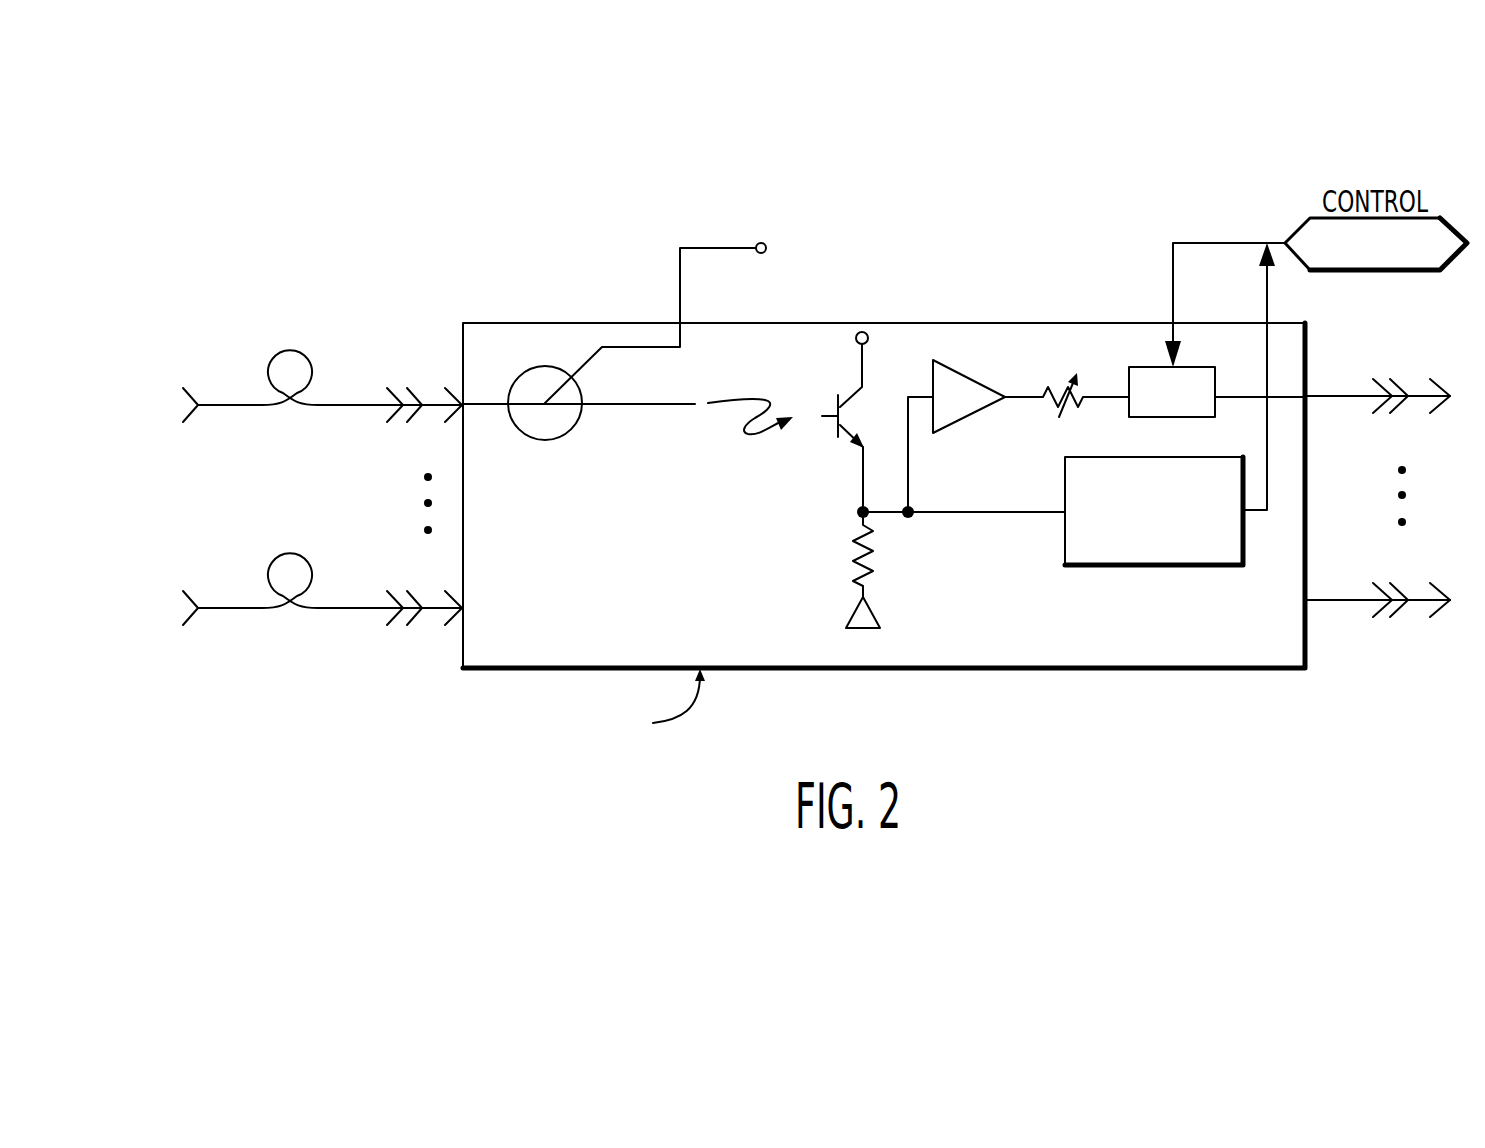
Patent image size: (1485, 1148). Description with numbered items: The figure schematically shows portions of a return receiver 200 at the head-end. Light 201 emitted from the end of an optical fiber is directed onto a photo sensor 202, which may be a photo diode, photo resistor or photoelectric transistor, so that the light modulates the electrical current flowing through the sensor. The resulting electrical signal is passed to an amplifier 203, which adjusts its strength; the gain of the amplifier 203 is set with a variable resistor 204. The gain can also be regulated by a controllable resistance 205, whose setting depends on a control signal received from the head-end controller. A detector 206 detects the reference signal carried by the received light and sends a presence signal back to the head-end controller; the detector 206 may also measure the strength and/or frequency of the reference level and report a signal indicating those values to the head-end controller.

The return receiver 200 is at (1325, 702).
The light 201 is at (762, 372).
The photo sensor 202 is at (838, 362).
The amplifier 203 is at (965, 382).
The variable resistor 204 is at (1059, 366).
The controllable resistance 205 is at (1138, 367).
The detector 206 is at (1092, 565).